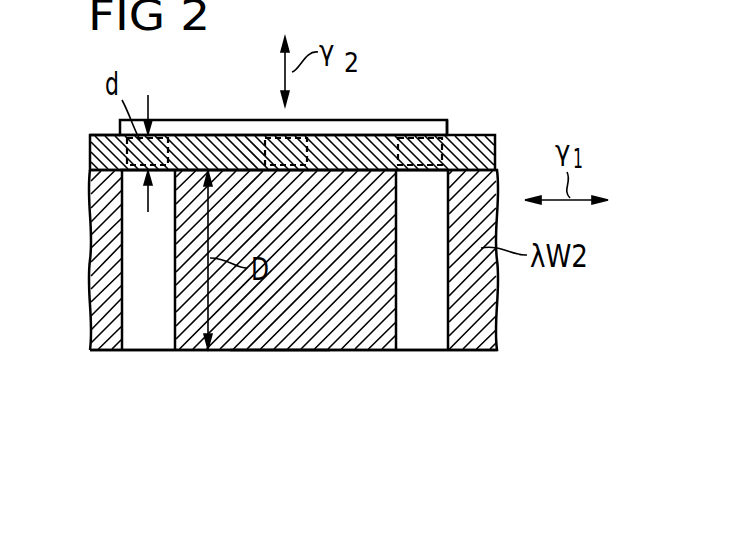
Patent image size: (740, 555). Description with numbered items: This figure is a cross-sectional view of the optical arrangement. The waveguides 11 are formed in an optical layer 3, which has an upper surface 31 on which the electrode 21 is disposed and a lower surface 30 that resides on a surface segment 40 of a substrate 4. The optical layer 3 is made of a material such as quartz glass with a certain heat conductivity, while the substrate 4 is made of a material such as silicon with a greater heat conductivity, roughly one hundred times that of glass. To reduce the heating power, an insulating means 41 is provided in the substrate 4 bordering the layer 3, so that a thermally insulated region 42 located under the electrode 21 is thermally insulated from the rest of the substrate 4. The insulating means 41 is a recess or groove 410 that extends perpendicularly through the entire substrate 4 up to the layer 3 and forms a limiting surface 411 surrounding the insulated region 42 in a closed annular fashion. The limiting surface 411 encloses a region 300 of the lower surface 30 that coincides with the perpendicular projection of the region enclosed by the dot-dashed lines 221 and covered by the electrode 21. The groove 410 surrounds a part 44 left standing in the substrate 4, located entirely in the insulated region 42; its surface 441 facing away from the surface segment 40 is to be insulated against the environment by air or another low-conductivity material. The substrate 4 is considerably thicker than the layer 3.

The optical layer 3 is at (486, 135).
The upper surface 31 is at (105, 133).
The lower surface 30 is at (90, 200).
The waveguides 11 is at (165, 135).
The electrode 21 is at (381, 128).
The dot-dashed lines 221 is at (449, 131).
The surface segment 40 is at (232, 166).
The substrate 4 is at (488, 308).
The insulating means 41 is at (447, 299).
The recess or groove 410 is at (130, 312).
The limiting surface 411 is at (132, 300).
The thermally insulated region 42 is at (248, 312).
The part 44 is at (343, 350).
The surface 441 is at (278, 350).
The region 300 is at (420, 176).